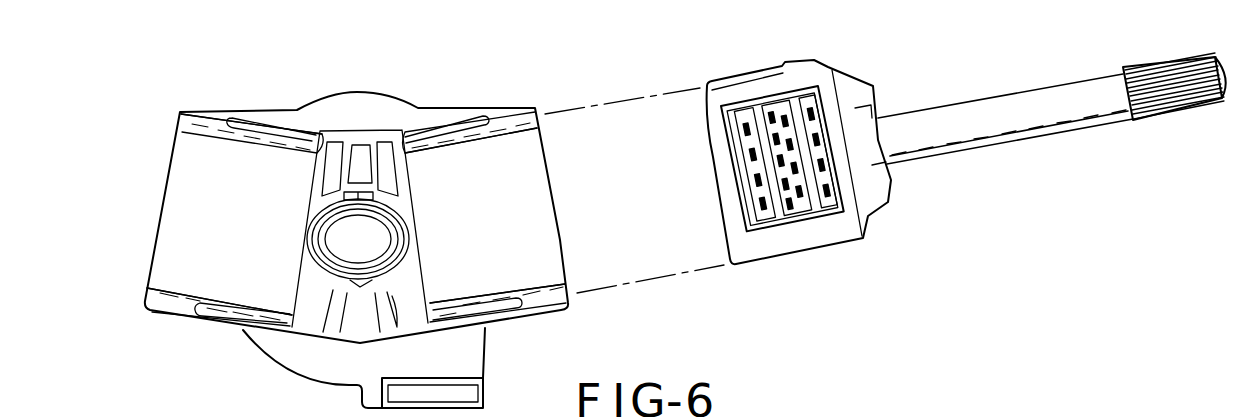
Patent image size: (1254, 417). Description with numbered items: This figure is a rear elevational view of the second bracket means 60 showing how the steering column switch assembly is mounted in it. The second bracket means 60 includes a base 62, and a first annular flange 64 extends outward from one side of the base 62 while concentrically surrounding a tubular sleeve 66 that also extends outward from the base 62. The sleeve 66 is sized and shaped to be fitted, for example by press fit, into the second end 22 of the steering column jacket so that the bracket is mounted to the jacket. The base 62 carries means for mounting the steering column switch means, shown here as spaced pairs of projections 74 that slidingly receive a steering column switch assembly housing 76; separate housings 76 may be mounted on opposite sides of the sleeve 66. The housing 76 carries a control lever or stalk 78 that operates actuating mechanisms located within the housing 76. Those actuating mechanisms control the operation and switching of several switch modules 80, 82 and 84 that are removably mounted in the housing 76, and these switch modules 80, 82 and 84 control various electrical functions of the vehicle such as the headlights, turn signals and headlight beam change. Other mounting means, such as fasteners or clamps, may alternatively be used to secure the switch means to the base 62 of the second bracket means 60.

The second end of the jacket 22 is at (1008, 403).
The second bracket means 60 is at (393, 53).
The base 62 is at (175, 140).
The first annular flange 64 is at (390, 329).
The tubular sleeve 66 is at (345, 276).
The spaced pairs of projections 74 is at (505, 108).
The steering column switch assembly housing 76 is at (790, 243).
The control lever or stalk 78 is at (970, 141).
The switch module 80 is at (725, 105).
The switch module 82 is at (768, 105).
The switch module 84 is at (804, 105).